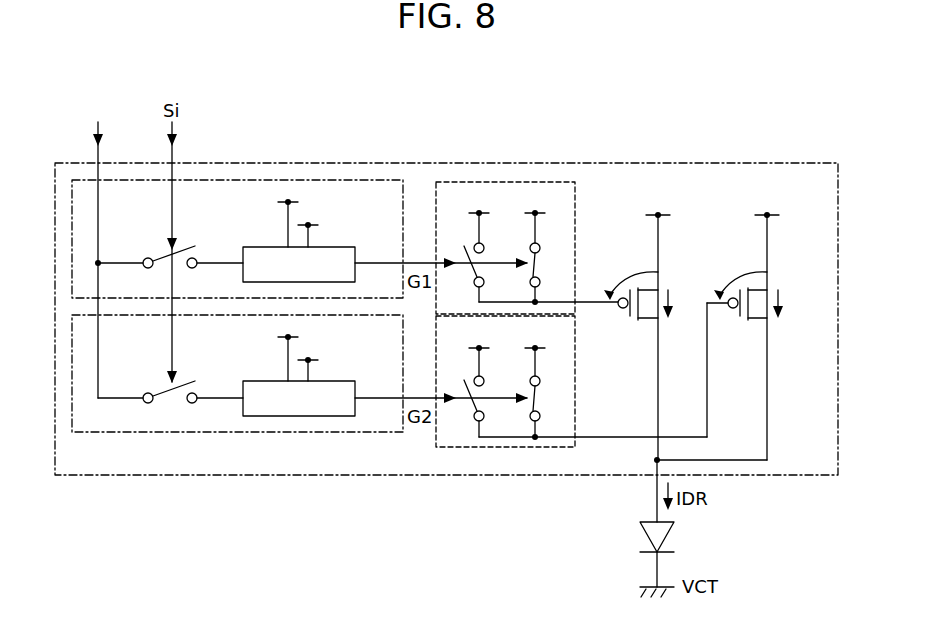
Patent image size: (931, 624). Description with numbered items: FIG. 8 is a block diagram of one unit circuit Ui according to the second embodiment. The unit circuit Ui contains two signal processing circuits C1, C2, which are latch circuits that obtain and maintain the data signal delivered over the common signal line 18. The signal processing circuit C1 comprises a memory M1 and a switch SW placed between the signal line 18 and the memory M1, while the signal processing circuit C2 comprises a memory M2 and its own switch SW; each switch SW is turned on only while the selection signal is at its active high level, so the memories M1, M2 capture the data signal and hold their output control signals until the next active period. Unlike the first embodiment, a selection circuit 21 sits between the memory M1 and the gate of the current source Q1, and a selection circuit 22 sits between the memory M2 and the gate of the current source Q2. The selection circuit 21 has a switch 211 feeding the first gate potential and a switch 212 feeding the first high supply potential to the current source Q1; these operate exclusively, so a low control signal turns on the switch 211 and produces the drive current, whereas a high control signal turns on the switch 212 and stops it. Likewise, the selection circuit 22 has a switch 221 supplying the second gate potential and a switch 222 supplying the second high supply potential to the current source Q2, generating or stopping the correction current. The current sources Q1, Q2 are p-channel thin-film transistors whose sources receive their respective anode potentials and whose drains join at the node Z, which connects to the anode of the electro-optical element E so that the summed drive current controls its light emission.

The signal line 18 is at (98, 152).
The selection circuit 21 is at (531, 214).
The selection circuit 22 is at (531, 419).
The switch 211 is at (474, 283).
The switch 212 is at (543, 249).
The switch 221 is at (474, 414).
The switch 222 is at (543, 380).
The signal processing circuit C1 is at (72, 235).
The signal processing circuit C2 is at (72, 368).
The unit circuit Ui is at (842, 348).
The memory M1 is at (265, 247).
The memory M2 is at (265, 381).
The current source Q1 is at (645, 323).
The current source Q2 is at (755, 323).
The switch SW is at (145, 259).
The node Z is at (654, 460).
The electro-optical element E is at (640, 537).